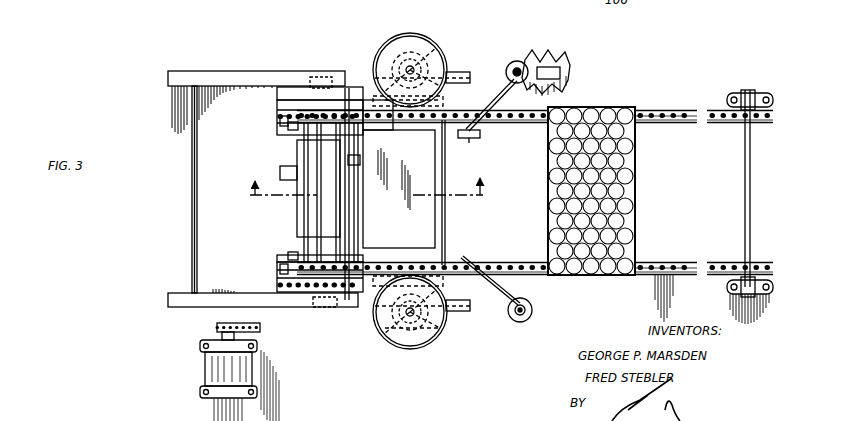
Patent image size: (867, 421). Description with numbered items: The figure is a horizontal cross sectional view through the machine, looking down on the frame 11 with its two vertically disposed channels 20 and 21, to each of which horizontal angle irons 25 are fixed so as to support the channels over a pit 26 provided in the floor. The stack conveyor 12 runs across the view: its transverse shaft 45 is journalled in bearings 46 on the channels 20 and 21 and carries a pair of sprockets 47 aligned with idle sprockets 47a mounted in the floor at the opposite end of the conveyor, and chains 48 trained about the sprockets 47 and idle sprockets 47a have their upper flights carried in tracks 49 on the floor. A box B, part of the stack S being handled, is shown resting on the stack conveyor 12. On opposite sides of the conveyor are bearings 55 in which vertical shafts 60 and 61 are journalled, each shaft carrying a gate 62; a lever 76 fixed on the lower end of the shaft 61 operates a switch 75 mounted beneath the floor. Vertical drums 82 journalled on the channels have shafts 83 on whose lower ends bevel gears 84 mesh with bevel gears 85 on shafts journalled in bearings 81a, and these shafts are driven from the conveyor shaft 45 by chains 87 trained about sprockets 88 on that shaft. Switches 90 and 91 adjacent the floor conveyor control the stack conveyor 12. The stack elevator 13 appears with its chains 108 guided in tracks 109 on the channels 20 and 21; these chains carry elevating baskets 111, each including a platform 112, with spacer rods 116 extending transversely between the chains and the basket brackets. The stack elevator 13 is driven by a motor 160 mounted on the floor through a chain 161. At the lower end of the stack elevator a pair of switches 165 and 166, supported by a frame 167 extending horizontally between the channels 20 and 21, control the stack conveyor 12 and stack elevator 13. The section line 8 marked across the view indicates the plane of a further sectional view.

The section line 8 is at (365, 190).
The frame 11 is at (274, 262).
The stack conveyor 12 is at (531, 123).
The stack elevator 13 is at (346, 251).
The channel 20 is at (277, 96).
The channel 21 is at (278, 278).
The horizontal angle irons 25 is at (203, 73).
The pit 26 is at (196, 222).
The transverse shaft 45 is at (317, 210).
The bearings 46 is at (326, 78).
The sprockets 47 is at (288, 130).
The idle sprockets 47a is at (760, 122).
The chains 48 is at (664, 110).
The tracks 49 is at (682, 123).
The bearings 55 is at (513, 62).
The vertical shaft 60 is at (522, 322).
The vertical shaft 61 is at (519, 70).
The gate 62 is at (498, 95).
The switch 75 is at (561, 72).
The lever 76 is at (540, 62).
The bearings 81a is at (438, 88).
The vertical drums 82 is at (420, 36).
The shafts 83 is at (410, 66).
The bevel gears 84 is at (438, 55).
The bevel gears 85 is at (447, 70).
The chains 87 is at (352, 97).
The sprockets 88 is at (300, 100).
The switch 90 is at (469, 144).
The switch 91 is at (385, 133).
The stack elevator chains 108 is at (290, 126).
The tracks 109 is at (281, 120).
The elevating baskets 111 is at (437, 210).
The platform 112 is at (410, 182).
The spacer rods 116 is at (357, 215).
The motor 160 is at (204, 370).
The chain 161 is at (250, 327).
The switch 165 is at (282, 172).
The switch 166 is at (360, 160).
The frame 167 is at (304, 153).
The box B is at (636, 172).
The fruit S is at (638, 212).